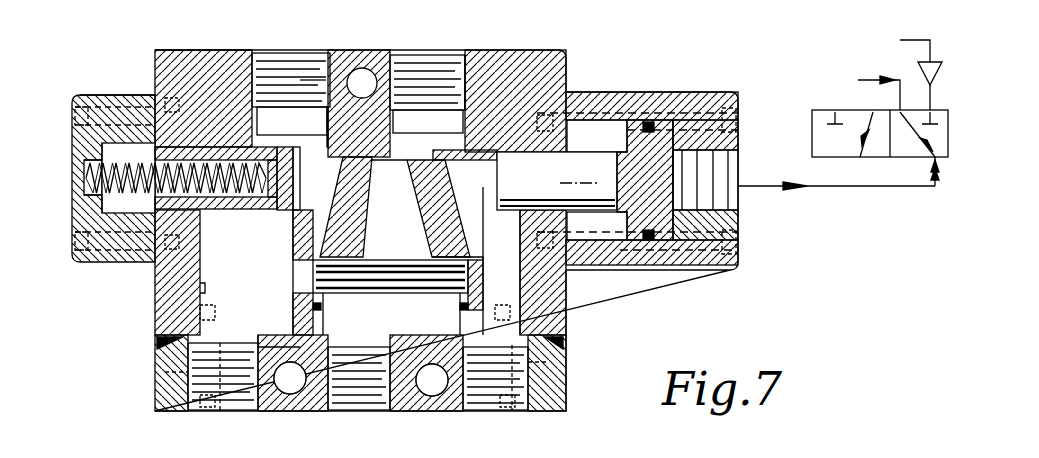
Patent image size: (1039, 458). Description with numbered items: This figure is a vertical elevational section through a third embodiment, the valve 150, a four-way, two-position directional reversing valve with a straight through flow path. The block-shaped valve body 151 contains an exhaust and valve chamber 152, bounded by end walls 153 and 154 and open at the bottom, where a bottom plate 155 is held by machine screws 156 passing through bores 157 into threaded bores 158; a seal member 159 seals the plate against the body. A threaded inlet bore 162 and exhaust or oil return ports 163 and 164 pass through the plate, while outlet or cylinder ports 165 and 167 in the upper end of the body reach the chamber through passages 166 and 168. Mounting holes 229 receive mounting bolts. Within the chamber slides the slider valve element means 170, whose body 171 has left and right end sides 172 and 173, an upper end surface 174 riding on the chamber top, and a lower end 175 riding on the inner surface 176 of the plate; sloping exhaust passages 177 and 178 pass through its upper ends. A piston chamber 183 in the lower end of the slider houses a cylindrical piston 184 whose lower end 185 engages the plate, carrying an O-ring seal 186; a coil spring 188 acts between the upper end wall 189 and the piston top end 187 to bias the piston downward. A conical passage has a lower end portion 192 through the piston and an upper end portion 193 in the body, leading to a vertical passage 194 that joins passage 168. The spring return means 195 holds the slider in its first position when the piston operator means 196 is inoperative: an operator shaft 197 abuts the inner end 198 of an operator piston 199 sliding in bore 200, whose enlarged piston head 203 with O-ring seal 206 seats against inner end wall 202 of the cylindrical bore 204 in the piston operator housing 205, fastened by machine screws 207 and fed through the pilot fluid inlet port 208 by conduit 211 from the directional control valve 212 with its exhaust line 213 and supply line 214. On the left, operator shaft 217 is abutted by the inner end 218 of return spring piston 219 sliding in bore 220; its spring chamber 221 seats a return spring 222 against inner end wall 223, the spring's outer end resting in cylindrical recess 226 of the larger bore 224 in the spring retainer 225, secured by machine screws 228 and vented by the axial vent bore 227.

The valve 150 is at (244, 49).
The valve body 151 is at (176, 57).
The exhaust and valve chamber 152 is at (398, 133).
The end wall 153 is at (200, 292).
The end wall 154 is at (528, 298).
The bottom plate 155 is at (555, 392).
The machine screws 156 is at (197, 428).
The bores 157 is at (165, 372).
The threaded bores 158 is at (200, 317).
The seal member 159 is at (562, 343).
The threaded inlet bore 162 is at (392, 400).
The threaded exhaust or oil return port 163 is at (246, 400).
The threaded exhaust or oil return port 164 is at (464, 405).
The threaded outlet or cylinder port 165 is at (262, 68).
The passage 166 is at (320, 135).
The threaded outlet or cylinder port 167 is at (462, 75).
The passage 168 is at (397, 100).
The slider valve element means 170 is at (286, 268).
The body 171 is at (290, 290).
The left end side 172 is at (279, 348).
The right end side 173 is at (510, 262).
The upper end surface 174 is at (298, 196).
The lower end 175 is at (502, 372).
The inner surface 176 is at (392, 365).
The exhaust passage 177 is at (350, 212).
The exhaust passage 178 is at (390, 264).
The cylindrical bore or piston chamber 183 is at (502, 261).
The cylindrical piston 184 is at (322, 308).
The lower end 185 is at (398, 278).
The O-ring seal 186 is at (312, 306).
The top end 187 is at (428, 293).
The coil spring 188 is at (292, 240).
The upper end wall 189 is at (368, 234).
The lower end portion 192 is at (341, 398).
The upper end portion 193 is at (463, 230).
The vertical passage 194 is at (483, 182).
The spring return means 195 is at (86, 90).
The piston operator means 196 is at (572, 88).
The operator shaft 197 is at (487, 155).
The inner end 198 is at (500, 181).
The operator piston 199 is at (580, 150).
The bore 200 is at (558, 190).
The inner end wall 202 is at (655, 262).
The piston head 203 is at (672, 150).
The cylindrical bore or chamber 204 is at (608, 118).
The piston operator housing 205 is at (715, 270).
The O-ring seal 206 is at (650, 120).
The machine screws 207 is at (742, 118).
The threaded pilot fluid inlet port 208 is at (740, 162).
The conduit 211 is at (847, 187).
The directional control valve 212 is at (935, 180).
The exhaust line 213 is at (900, 98).
The supply line 214 is at (928, 50).
The operator shaft 217 is at (310, 140).
The inner end 218 is at (290, 197).
The return spring piston 219 is at (200, 130).
The bore 220 is at (160, 206).
The cylindrical spring chamber 221 is at (160, 178).
The return spring 222 is at (75, 252).
The inner end wall 223 is at (255, 150).
The bore 224 is at (103, 153).
The spring retainer 225 is at (112, 95).
The cylindrical recess 226 is at (100, 195).
The axial vent bore 227 is at (88, 178).
The machine screws 228 is at (70, 100).
The mounting holes 229 is at (360, 68).